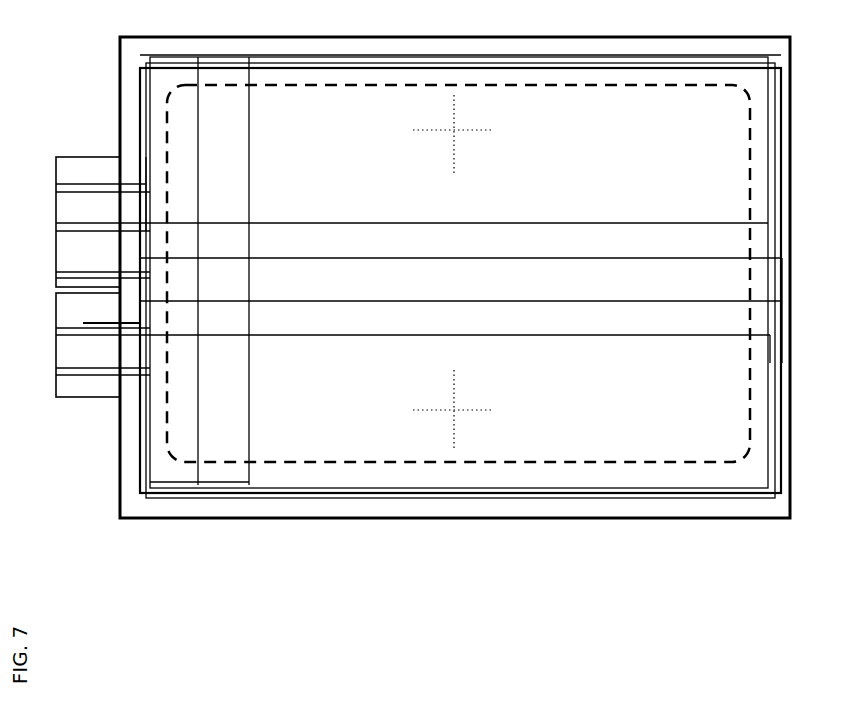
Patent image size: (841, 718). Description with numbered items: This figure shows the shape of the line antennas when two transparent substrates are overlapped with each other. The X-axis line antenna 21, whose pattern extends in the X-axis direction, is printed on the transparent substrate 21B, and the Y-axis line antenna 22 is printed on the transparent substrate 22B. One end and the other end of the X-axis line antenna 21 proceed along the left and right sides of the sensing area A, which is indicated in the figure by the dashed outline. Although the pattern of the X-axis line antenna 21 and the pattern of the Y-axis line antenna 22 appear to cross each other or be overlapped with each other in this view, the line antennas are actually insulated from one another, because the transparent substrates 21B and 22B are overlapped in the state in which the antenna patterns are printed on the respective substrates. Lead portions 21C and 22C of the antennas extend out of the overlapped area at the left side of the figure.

The X-axis line antenna 21 is at (251, 413).
The Y-axis line antenna 22 is at (392, 221).
The transparent substrate 21B is at (119, 488).
The transparent substrate 22B is at (455, 277).
The positive electrode tab 21C is at (95, 155).
The negative electrode tab 22C is at (103, 345).
The sensing area A is at (590, 461).